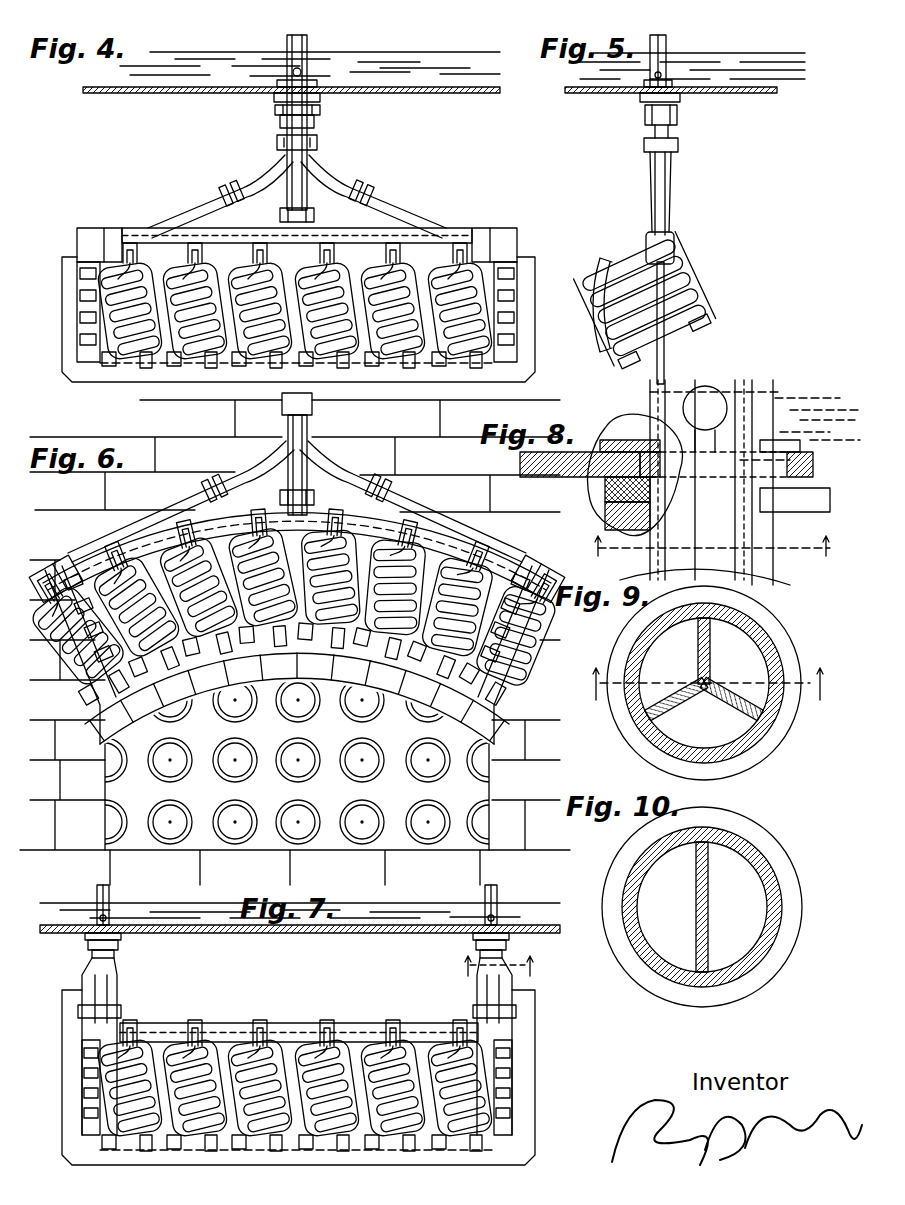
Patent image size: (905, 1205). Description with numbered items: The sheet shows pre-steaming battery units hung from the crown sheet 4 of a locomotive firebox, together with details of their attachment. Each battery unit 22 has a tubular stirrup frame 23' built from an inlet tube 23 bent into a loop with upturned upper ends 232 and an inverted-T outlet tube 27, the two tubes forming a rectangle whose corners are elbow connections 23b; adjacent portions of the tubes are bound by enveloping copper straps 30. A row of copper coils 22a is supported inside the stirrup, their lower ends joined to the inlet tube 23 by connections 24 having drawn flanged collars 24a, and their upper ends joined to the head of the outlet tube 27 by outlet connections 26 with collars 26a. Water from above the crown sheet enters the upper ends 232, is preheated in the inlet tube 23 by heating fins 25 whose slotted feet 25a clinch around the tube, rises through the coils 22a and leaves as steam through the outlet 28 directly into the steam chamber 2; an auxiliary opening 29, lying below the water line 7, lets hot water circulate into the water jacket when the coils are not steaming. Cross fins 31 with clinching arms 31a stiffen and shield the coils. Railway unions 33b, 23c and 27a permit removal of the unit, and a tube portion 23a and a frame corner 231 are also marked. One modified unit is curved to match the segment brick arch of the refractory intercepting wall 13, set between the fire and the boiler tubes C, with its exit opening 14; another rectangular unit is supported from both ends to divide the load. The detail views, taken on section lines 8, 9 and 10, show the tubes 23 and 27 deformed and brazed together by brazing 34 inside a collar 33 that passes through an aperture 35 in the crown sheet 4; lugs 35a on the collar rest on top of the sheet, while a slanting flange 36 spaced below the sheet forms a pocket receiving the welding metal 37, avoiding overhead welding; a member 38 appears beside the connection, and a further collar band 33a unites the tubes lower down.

In FIG. 4, the steam chamber 2 is at (379, 42).
In FIG. 5, the steam chamber 2 is at (746, 43).
In FIG. 8, the steam chamber 2 is at (810, 392).
In FIG. 7, the steam chamber 2 is at (550, 897).
In FIG. 4, the crown sheet 4 is at (436, 94).
In FIG. 5, the crown sheet 4 is at (722, 94).
In FIG. 8, the crown sheet 4 is at (534, 478).
In FIG. 7, the crown sheet 4 is at (300, 929).
In FIG. 4, the water surface 7 is at (436, 58).
In FIG. 5, the water surface 7 is at (790, 60).
In FIG. 8, the water surface 7 is at (826, 410).
In FIG. 7, the water surface 7 is at (390, 908).
In FIG. 9, the section line 8— 8 is at (707, 690).
In FIG. 8, the section line 9— 9 is at (712, 548).
In FIG. 7, the section line 10— 10 is at (498, 966).
In FIG. 6, the intercepting wall 13 is at (392, 470).
In FIG. 6, the exit opening 14 is at (460, 796).
In FIG. 6, the boiler tubes C is at (358, 756).
In FIG. 4, the battery unit 22 is at (144, 217).
In FIG. 5, the battery unit 22 is at (680, 204).
In FIG. 6, the battery unit 22 is at (187, 493).
In FIG. 7, the battery unit 22 is at (313, 1019).
In FIG. 4, the coils 22a is at (342, 368).
In FIG. 5, the coils 22a is at (700, 290).
In FIG. 6, the coils 22a is at (226, 654).
In FIG. 7, the coils 22a is at (346, 1052).
In FIG. 4, the inlet tube 23 is at (297, 196).
In FIG. 5, the inlet tube 23 is at (683, 192).
In FIG. 6, the inlet tube 23 is at (297, 501).
In FIG. 7, the inlet tube 23 is at (300, 1046).
In FIG. 6, the pipe branch 23a is at (372, 480).
In FIG. 4, the corner elbow connections 23b is at (82, 230).
In FIG. 5, the corner elbow connections 23b is at (675, 242).
In FIG. 6, the corner elbow connections 23b is at (50, 552).
In FIG. 7, the corner elbow connections 23b is at (72, 1144).
In FIG. 4, the railway union 23c is at (230, 186).
In FIG. 6, the railway union 23c is at (214, 478).
In FIG. 4, the stirrup frame 23' is at (328, 346).
In FIG. 6, the stirrup frame 23' is at (187, 654).
In FIG. 7, the stirrup frame 23' is at (297, 1132).
In FIG. 4, the casing corner (23 superscript 1) 231 is at (62, 372).
In FIG. 4, the upper ends of inlet tube 232 is at (283, 84).
In FIG. 5, the upper ends of inlet tube 232 is at (672, 82).
In FIG. 8, the upper ends of inlet tube 232 is at (772, 420).
In FIG. 9, the upper ends of inlet tube 232 is at (642, 690).
In FIG. 10, the upper ends of inlet tube 232 is at (752, 906).
In FIG. 7, the upper ends of inlet tube 232 is at (92, 920).
In FIG. 5, the intake connections 24 is at (696, 352).
In FIG. 4, the drawn flanged collars 24a is at (190, 370).
In FIG. 5, the drawn flanged collars 24a is at (676, 362).
In FIG. 6, the drawn flanged collars 24a is at (306, 652).
In FIG. 7, the drawn flanged collars 24a is at (300, 1140).
In FIG. 4, the heating fins 25 is at (62, 300).
In FIG. 5, the heating fins 25 is at (640, 352).
In FIG. 8, the heating fins 25 is at (670, 384).
In FIG. 6, the heating fins 25 is at (66, 626).
In FIG. 7, the heating fins 25 is at (62, 1032).
In FIG. 4, the fin feet 25a is at (78, 332).
In FIG. 5, the fin feet 25a is at (706, 342).
In FIG. 6, the fin feet 25a is at (84, 672).
In FIG. 7, the fin feet 25a is at (82, 1092).
In FIG. 4, the outlet connections 26 is at (460, 244).
In FIG. 5, the outlet connections 26 is at (654, 262).
In FIG. 6, the outlet connections 26 is at (458, 578).
In FIG. 7, the outlet connections 26 is at (140, 1040).
In FIG. 4, the drawn flanged collars 26a is at (260, 240).
In FIG. 5, the drawn flanged collars 26a is at (648, 215).
In FIG. 6, the drawn flanged collars 26a is at (494, 564).
In FIG. 7, the drawn flanged collars 26a is at (258, 1040).
In FIG. 4, the outlet tube 27 is at (296, 36).
In FIG. 5, the outlet tube 27 is at (654, 165).
In FIG. 8, the outlet tube 27 is at (748, 385).
In FIG. 9, the outlet tube 27 is at (742, 730).
In FIG. 10, the outlet tube 27 is at (656, 934).
In FIG. 6, the outlet tube 27 is at (308, 425).
In FIG. 7, the outlet tube 27 is at (112, 990).
In FIG. 4, the railway union 27a is at (280, 216).
In FIG. 6, the railway union 27a is at (280, 497).
In FIG. 4, the outlet 28 is at (303, 36).
In FIG. 5, the outlet 28 is at (664, 38).
In FIG. 7, the outlet 28 is at (96, 890).
In FIG. 4, the water intake and outlet opening 29 is at (280, 104).
In FIG. 5, the water intake and outlet opening 29 is at (647, 59).
In FIG. 8, the water intake and outlet opening 29 is at (710, 400).
In FIG. 7, the water intake and outlet opening 29 is at (108, 914).
In FIG. 4, the enveloping copper straps 30 is at (112, 228).
In FIG. 6, the enveloping copper straps 30 is at (66, 552).
In FIG. 7, the enveloping copper straps 30 is at (121, 1010).
In FIG. 5, the cross fins 31 is at (620, 262).
In FIG. 5, the fin feet 31a is at (604, 338).
In FIG. 4, the collar 33 is at (315, 122).
In FIG. 5, the collar 33 is at (645, 118).
In FIG. 8, the collar 33 is at (606, 528).
In FIG. 9, the collar 33 is at (775, 650).
In FIG. 10, the collar 33 is at (762, 958).
In FIG. 6, the collar 33 is at (312, 404).
In FIG. 7, the collar 33 is at (114, 956).
In FIG. 4, the collar band 33a is at (318, 143).
In FIG. 5, the collar band 33a is at (679, 145).
In FIG. 4, the railway union 33b is at (275, 110).
In FIG. 7, the railway union 33b is at (118, 945).
In FIG. 8, the brazing 34 is at (652, 506).
In FIG. 9, the brazing 34 is at (698, 652).
In FIG. 10, the brazing 34 is at (696, 892).
In FIG. 4, the aperture 35 is at (320, 96).
In FIG. 5, the aperture 35 is at (680, 92).
In FIG. 8, the aperture 35 is at (662, 464).
In FIG. 7, the aperture 35 is at (110, 926).
In FIG. 4, the projecting lugs 35a is at (278, 83).
In FIG. 5, the projecting lugs 35a is at (662, 73).
In FIG. 8, the projecting lugs 35a is at (604, 442).
In FIG. 9, the projecting lugs 35a is at (614, 634).
In FIG. 4, the projecting flange 36 is at (274, 96).
In FIG. 5, the projecting flange 36 is at (640, 98).
In FIG. 8, the projecting flange 36 is at (606, 508).
In FIG. 9, the projecting flange 36 is at (642, 744).
In FIG. 10, the projecting flange 36 is at (780, 858).
In FIG. 7, the projecting flange 36 is at (88, 946).
In FIG. 4, the welding metal 37 is at (321, 98).
In FIG. 5, the welding metal 37 is at (681, 97).
In FIG. 8, the welding metal 37 is at (606, 484).
In FIG. 7, the welding metal 37 is at (85, 938).
In FIG. 8, the side pipe 38 is at (800, 510).